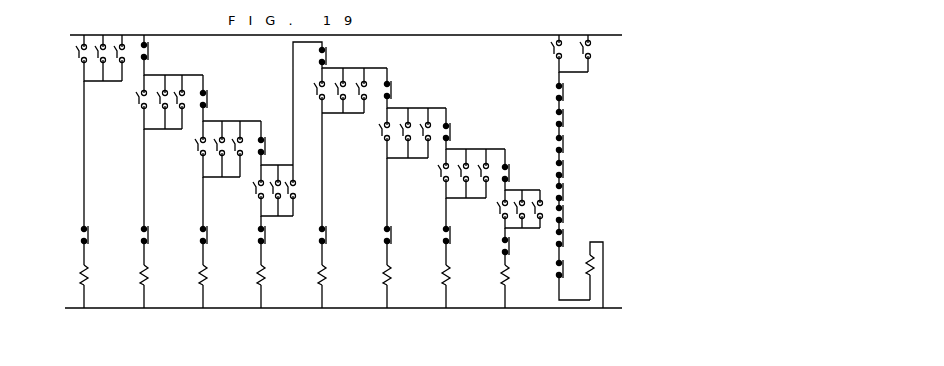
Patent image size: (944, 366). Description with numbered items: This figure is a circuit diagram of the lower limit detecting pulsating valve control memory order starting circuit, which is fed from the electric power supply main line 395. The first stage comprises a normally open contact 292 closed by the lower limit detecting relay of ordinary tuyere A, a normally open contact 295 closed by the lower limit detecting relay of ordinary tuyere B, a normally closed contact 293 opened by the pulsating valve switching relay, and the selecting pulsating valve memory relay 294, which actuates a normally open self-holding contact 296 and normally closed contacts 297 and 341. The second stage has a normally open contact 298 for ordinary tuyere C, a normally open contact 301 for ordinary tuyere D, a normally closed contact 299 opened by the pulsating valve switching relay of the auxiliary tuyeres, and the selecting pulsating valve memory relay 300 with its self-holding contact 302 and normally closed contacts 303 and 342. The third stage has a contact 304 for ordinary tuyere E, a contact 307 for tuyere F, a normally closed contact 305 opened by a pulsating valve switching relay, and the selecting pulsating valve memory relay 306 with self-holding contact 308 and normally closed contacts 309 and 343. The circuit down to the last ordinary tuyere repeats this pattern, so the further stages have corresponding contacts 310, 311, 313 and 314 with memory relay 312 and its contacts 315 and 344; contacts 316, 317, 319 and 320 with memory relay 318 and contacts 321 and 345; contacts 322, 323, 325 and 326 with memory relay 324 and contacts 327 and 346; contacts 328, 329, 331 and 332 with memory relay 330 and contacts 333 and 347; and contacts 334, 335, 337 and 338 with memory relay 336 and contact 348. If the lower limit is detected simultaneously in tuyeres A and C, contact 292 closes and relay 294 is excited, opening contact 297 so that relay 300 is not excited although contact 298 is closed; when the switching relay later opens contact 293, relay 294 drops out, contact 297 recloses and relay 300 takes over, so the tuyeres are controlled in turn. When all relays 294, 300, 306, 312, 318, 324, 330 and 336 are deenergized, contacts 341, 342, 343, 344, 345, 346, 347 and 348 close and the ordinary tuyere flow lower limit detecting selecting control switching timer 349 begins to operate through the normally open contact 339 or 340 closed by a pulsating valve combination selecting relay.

The normally open contact 292 is at (90, 58).
The normally closed contact 293 is at (71, 173).
The selecting pulsating valve memory relay 294 is at (71, 286).
The normally open contact 295 is at (96, 58).
The normally open self-holding contact 296 is at (119, 58).
The normally closed contact 297 is at (172, 55).
The normally open contact 298 is at (142, 102).
The normally closed contact 299 is at (131, 197).
The selecting pulsating valve memory relay 300 is at (131, 286).
The normally open contact 301 is at (158, 102).
The normally open self-holding contact 302 is at (177, 102).
The normally closed contact 303 is at (230, 98).
The normally closed contact 304 is at (207, 149).
The normally closed contact 305 is at (190, 221).
The selecting pulsating valve memory relay 306 is at (190, 286).
The normally closed contact 307 is at (217, 149).
The normally open self-holding contact 308 is at (235, 149).
The normally closed contact 309 is at (278, 143).
The contact 310 is at (259, 190).
The contact 311 is at (249, 240).
The selecting pulsating valve memory relay 312 is at (249, 286).
The contact 313 is at (274, 191).
The contact 314 is at (291, 190).
The contact 315 is at (340, 103).
The contact 316 is at (311, 148).
The contact 317 is at (310, 245).
The selecting pulsating valve memory relay 318 is at (310, 286).
The contact 319 is at (343, 92).
The contact 320 is at (359, 92).
The contact 321 is at (415, 88).
The contact 322 is at (394, 133).
The contact 323 is at (374, 211).
The selecting pulsating valve memory relay 324 is at (374, 286).
The contact 325 is at (401, 136).
The contact 326 is at (422, 133).
The contact 327 is at (474, 128).
The contact 328 is at (452, 173).
The contact 329 is at (433, 231).
The selecting pulsating valve memory relay 330 is at (433, 286).
The contact 331 is at (460, 174).
The contact 332 is at (479, 173).
The contact 333 is at (522, 169).
The contact 334 is at (508, 212).
The contact 335 is at (492, 246).
The selecting pulsating valve memory relay 336 is at (492, 286).
The contact 337 is at (518, 213).
The contact 338 is at (535, 209).
The normally open contact 339 is at (558, 53).
The normally open contact 340 is at (577, 53).
The normally closed contact 341 is at (576, 92).
The normally closed contact 342 is at (576, 123).
The normally closed contact 343 is at (576, 149).
The normally open contact 344 is at (576, 173).
The normally open contact 345 is at (576, 195).
The normally open contact 346 is at (576, 218).
The normally open contact 347 is at (546, 246).
The normally open contact 348 is at (558, 280).
The ordinary tuyere flow lower limit detecting selecting control switching timer 349 is at (584, 275).
The electric power supply main line 395 is at (74, 34).